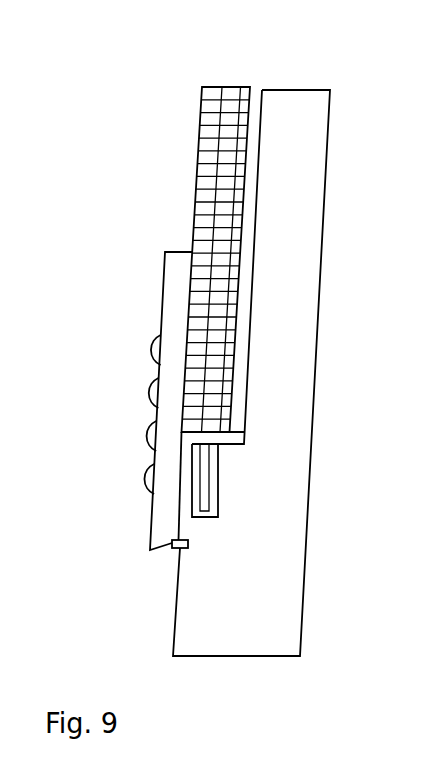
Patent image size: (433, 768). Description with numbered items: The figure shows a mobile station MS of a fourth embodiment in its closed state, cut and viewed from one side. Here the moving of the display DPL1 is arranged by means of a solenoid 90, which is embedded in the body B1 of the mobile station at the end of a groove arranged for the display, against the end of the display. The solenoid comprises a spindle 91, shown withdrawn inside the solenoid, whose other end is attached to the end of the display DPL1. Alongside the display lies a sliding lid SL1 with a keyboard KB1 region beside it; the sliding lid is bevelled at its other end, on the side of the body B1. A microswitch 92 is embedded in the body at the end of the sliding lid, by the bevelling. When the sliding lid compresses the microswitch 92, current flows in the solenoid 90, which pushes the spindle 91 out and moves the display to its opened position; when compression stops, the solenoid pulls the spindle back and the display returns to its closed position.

The mobile station MS is at (264, 70).
The display DPL1 is at (197, 192).
The sliding lid SL1 is at (150, 461).
The keyboard KB1 is at (150, 496).
The body B1 is at (175, 605).
The spindle 91 is at (208, 434).
The solenoid 90 is at (219, 480).
The microswitch 92 is at (189, 543).